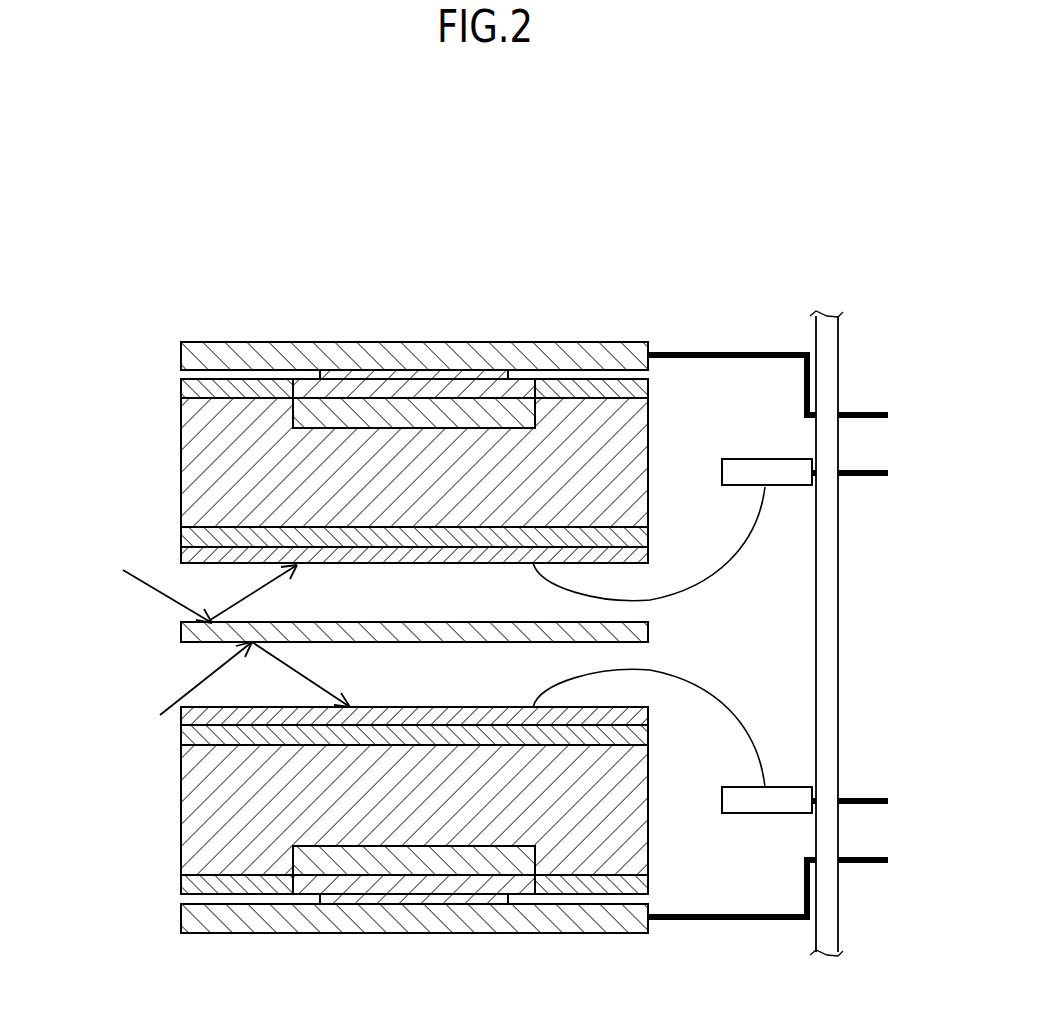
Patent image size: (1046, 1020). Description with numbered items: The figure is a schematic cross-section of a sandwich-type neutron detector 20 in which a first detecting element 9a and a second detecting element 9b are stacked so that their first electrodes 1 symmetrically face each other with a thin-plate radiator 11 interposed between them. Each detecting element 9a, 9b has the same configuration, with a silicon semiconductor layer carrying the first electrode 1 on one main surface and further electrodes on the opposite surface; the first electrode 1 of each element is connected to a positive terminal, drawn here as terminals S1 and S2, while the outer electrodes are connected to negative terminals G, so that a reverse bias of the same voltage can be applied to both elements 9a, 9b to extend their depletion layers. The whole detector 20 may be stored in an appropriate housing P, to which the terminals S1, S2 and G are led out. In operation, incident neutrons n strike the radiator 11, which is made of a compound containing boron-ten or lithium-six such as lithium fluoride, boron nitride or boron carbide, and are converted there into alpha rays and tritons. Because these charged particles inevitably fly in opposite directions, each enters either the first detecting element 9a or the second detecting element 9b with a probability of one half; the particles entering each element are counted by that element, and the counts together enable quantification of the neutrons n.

The sandwich-type neutron detector 20 is at (348, 584).
The first detecting element 9a is at (165, 458).
The second detecting element 9b is at (165, 803).
The radiator 11 is at (180, 632).
The neutron n is at (141, 585).
The first electrode 1 is at (650, 542).
The housing P is at (838, 543).
The negative terminal G is at (860, 415).
The first signal terminal S1 is at (872, 472).
The second signal terminal S2 is at (860, 800).